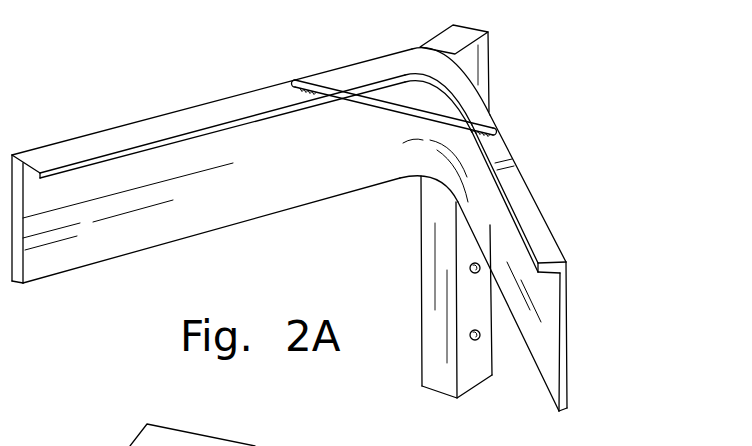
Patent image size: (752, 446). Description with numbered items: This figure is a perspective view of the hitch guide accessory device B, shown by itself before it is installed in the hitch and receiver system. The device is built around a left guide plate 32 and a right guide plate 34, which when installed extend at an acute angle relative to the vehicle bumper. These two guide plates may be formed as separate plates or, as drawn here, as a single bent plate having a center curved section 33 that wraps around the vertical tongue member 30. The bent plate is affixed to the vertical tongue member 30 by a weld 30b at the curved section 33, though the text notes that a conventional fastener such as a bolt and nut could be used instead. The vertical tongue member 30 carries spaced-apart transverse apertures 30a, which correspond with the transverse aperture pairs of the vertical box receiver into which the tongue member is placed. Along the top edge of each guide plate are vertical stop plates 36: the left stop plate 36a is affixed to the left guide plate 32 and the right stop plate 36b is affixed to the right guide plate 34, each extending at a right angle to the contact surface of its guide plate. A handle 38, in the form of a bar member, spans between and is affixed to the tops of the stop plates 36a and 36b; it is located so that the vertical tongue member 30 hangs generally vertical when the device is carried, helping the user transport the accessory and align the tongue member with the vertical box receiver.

The vertical tongue member 30 is at (483, 74).
The transverse apertures 30a is at (470, 333).
The weld 30b is at (467, 57).
The left guide plate 32 is at (143, 243).
The center curved section 33 is at (429, 140).
The right guide plate 34 is at (542, 305).
The vertical stop plates 36 is at (258, 85).
The left stop plate 36a is at (143, 125).
The right stop plate 36b is at (537, 234).
The handle 38 is at (377, 107).
The hitch guide accessory device B is at (542, 182).